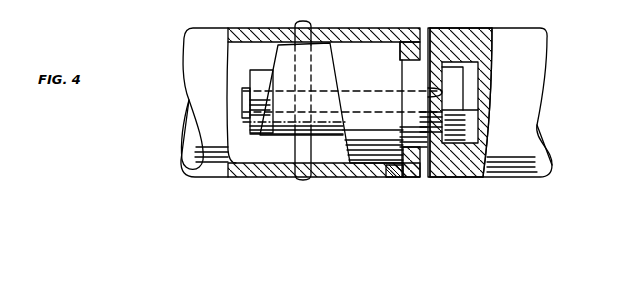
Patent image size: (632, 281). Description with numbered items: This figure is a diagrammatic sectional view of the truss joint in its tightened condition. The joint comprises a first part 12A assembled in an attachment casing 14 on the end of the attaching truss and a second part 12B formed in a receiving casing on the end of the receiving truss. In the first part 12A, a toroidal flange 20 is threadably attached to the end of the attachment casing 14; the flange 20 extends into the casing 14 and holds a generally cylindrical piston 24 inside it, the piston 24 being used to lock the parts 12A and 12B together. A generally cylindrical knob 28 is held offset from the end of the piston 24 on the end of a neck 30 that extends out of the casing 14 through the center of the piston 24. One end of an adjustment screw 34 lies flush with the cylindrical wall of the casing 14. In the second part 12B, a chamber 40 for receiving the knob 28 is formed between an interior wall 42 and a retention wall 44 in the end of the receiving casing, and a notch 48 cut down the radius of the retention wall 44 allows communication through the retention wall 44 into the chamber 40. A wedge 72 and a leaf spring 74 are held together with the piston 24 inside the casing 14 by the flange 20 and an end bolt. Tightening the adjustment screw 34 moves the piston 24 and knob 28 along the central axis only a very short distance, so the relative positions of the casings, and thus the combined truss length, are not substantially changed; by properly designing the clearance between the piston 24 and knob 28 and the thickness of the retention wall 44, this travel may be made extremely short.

The first part 12A is at (358, 182).
The second part 12B is at (535, 186).
The attachment casing 14 is at (200, 128).
The toroidal flange 20 is at (388, 178).
The piston 24 is at (341, 103).
The knob 28 is at (486, 100).
The neck 30 is at (460, 120).
The adjustment screw 34 is at (304, 24).
The chamber 40 is at (490, 72).
The interior wall 42 is at (480, 125).
The retention wall 44 is at (438, 130).
The notch 48 is at (468, 78).
The wedge 72 is at (280, 127).
The leaf spring 74 is at (252, 80).